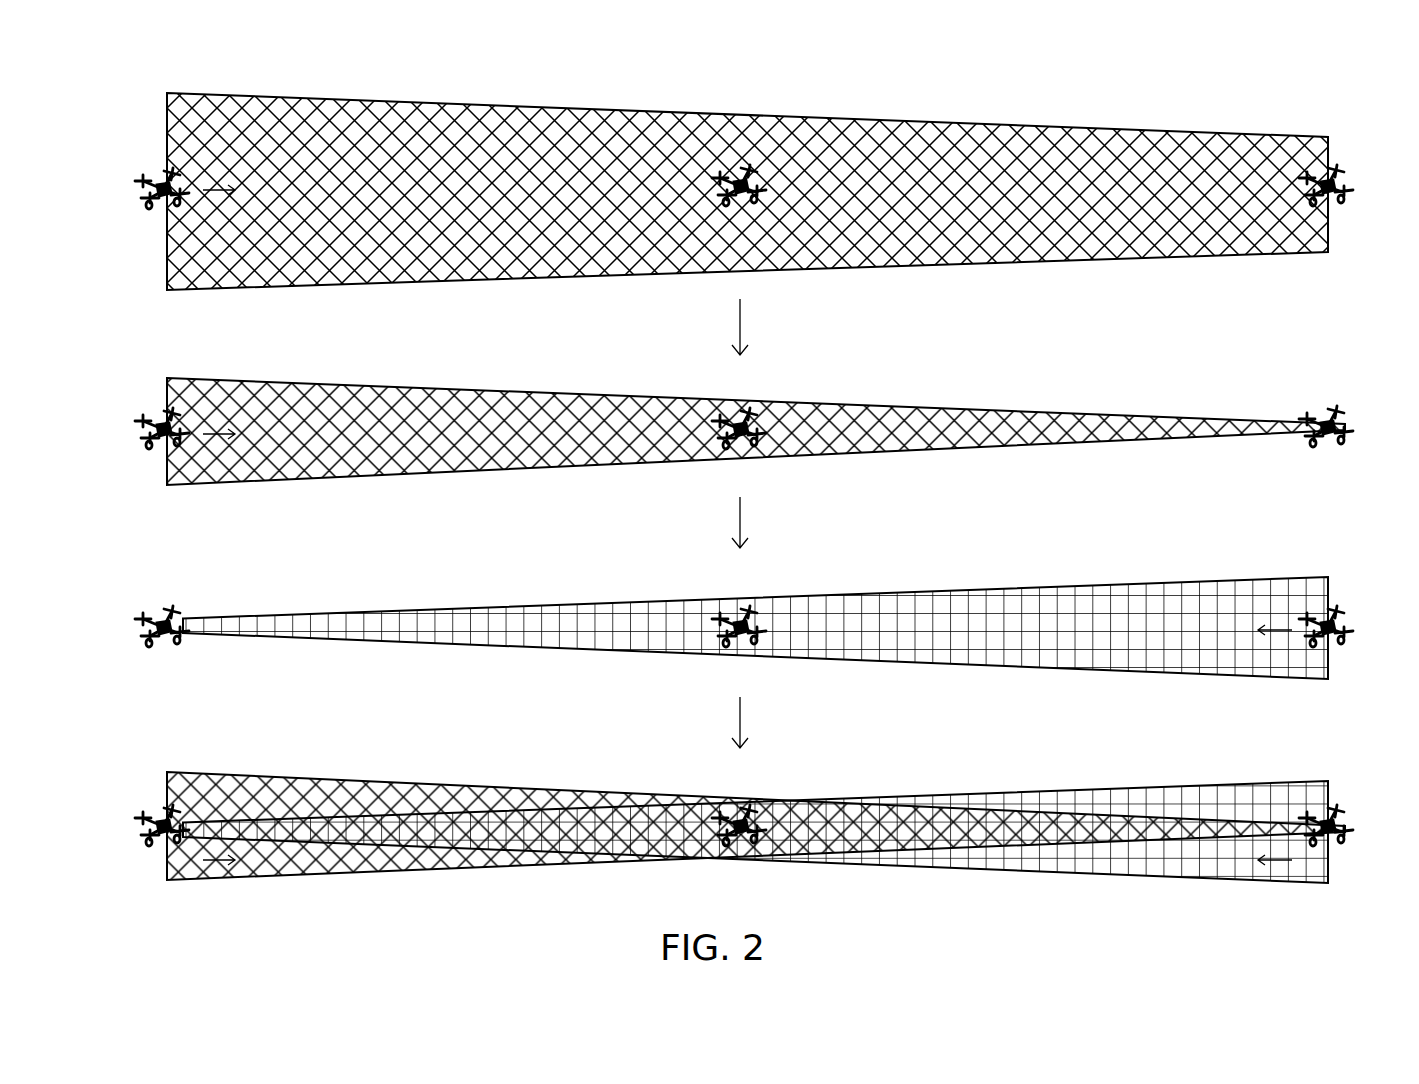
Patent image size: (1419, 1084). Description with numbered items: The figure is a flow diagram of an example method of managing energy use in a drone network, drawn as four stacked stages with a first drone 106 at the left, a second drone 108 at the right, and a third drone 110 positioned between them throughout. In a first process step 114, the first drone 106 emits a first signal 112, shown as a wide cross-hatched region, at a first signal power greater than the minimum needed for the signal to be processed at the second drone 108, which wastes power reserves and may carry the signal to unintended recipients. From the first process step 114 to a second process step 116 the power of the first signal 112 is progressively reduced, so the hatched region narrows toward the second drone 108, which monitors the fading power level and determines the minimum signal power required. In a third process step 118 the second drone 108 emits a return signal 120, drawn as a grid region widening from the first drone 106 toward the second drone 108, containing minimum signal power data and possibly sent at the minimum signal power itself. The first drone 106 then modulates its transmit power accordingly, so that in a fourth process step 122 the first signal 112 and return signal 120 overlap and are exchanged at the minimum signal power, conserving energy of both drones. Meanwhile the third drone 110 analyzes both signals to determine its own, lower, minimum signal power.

The first drone 106 is at (178, 170).
The second drone 108 is at (1336, 168).
The third drone 110 is at (752, 168).
The first signal 112 is at (348, 93).
The first process step 114 is at (153, 107).
The second process step 116 is at (153, 347).
The third process step 118 is at (153, 577).
The return signal 120 is at (1207, 578).
The fourth process step 122 is at (153, 742).